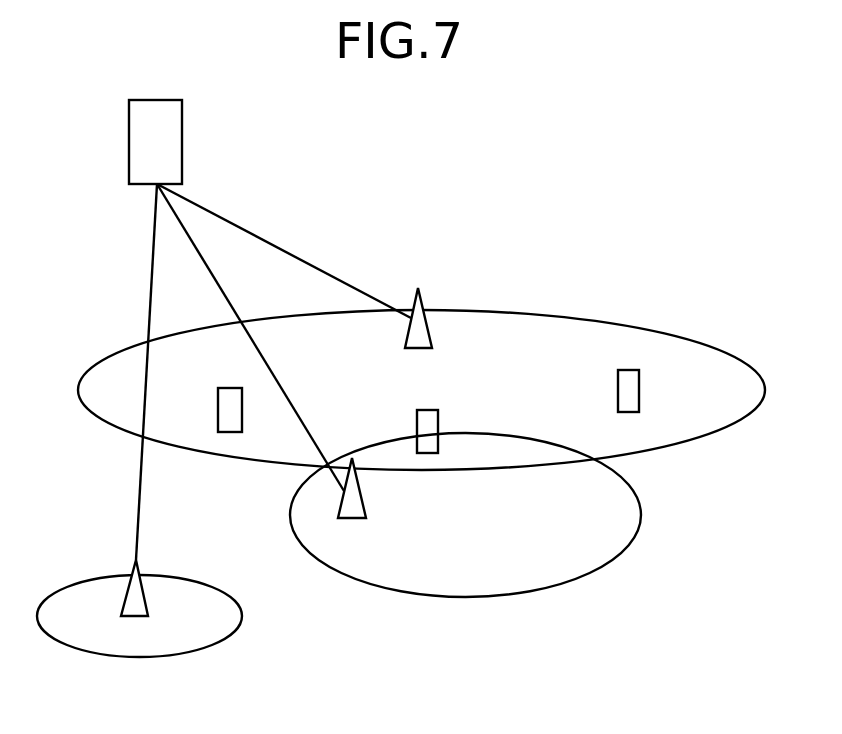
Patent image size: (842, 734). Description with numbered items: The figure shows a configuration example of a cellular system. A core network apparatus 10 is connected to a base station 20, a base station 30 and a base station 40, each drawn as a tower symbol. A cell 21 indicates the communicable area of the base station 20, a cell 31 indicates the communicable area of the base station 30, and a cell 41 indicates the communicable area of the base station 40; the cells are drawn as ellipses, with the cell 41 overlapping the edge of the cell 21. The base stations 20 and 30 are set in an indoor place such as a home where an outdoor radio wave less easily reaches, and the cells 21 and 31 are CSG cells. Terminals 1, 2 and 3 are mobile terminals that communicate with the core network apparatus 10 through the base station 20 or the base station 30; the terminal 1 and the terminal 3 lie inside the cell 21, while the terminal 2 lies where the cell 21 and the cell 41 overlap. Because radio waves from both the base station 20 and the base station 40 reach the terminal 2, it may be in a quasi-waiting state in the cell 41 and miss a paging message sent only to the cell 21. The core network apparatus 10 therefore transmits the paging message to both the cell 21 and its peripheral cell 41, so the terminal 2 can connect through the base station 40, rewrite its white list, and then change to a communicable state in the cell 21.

The core network apparatus 10 is at (183, 118).
The base station 20 is at (420, 294).
The cell 21 is at (643, 322).
The terminal 1 is at (243, 402).
The terminal 2 is at (439, 420).
The terminal 3 is at (640, 388).
The base station 40 is at (362, 502).
The cell 41 is at (642, 515).
The base station 30 is at (138, 562).
The cell 31 is at (205, 580).